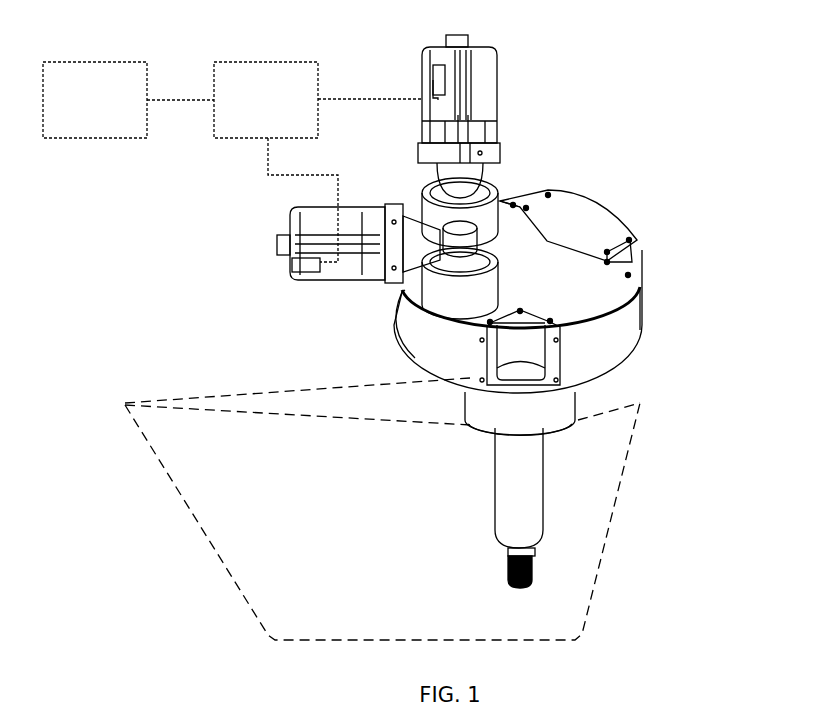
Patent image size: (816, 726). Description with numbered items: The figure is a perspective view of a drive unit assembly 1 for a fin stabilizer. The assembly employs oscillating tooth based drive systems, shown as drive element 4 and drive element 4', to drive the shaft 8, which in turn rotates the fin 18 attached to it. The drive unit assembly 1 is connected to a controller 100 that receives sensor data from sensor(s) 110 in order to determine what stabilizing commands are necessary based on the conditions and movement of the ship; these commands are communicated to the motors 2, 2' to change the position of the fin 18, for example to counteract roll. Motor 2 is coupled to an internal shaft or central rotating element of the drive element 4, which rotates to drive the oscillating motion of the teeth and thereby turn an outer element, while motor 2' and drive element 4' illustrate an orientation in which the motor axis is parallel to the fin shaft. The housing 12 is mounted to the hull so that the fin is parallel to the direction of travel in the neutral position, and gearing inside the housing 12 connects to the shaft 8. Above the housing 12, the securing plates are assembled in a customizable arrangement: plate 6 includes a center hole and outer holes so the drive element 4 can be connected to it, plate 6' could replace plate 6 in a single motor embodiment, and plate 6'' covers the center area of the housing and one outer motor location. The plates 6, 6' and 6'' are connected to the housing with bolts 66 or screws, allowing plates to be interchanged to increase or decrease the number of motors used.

The drive unit assembly 1 is at (573, 190).
The motor 2 is at (338, 260).
The motor 2' is at (486, 104).
The drive element 4 is at (417, 283).
The drive element 4' is at (484, 186).
The plate 6 is at (469, 362).
The plate 6' is at (587, 204).
The plate 6'' is at (579, 297).
The bolts 66 is at (630, 240).
The shaft 8 is at (543, 490).
The housing 12 is at (527, 350).
The fin 18 is at (262, 535).
The controller 100 is at (243, 138).
The sensor(s) 110 is at (100, 138).